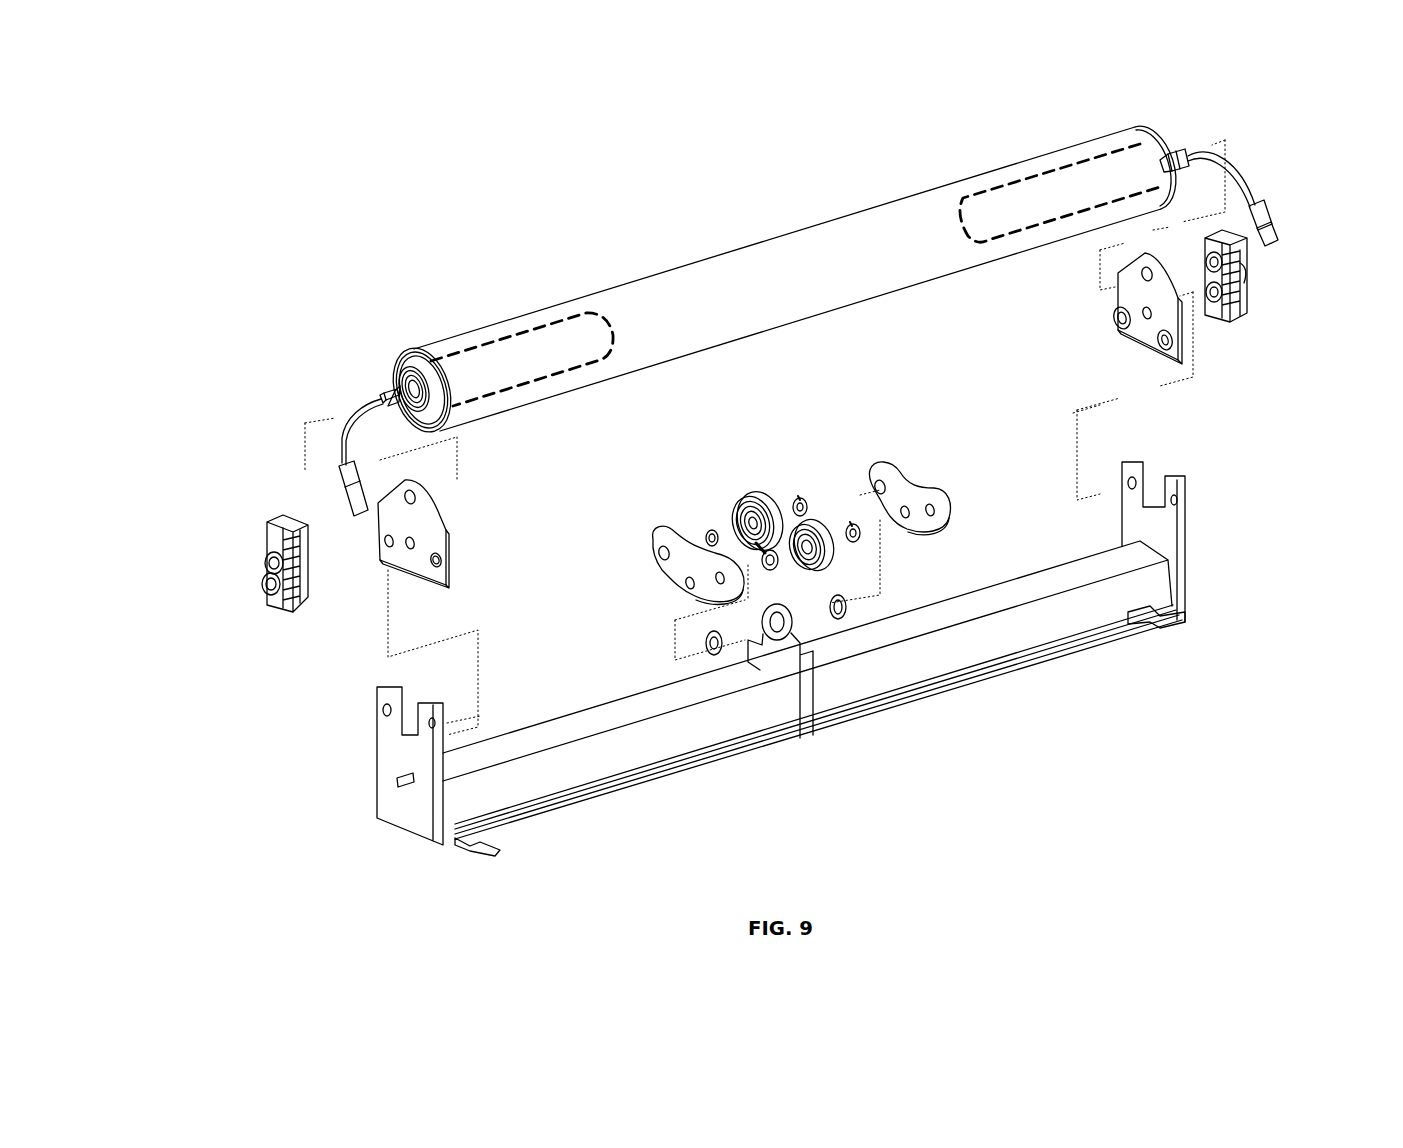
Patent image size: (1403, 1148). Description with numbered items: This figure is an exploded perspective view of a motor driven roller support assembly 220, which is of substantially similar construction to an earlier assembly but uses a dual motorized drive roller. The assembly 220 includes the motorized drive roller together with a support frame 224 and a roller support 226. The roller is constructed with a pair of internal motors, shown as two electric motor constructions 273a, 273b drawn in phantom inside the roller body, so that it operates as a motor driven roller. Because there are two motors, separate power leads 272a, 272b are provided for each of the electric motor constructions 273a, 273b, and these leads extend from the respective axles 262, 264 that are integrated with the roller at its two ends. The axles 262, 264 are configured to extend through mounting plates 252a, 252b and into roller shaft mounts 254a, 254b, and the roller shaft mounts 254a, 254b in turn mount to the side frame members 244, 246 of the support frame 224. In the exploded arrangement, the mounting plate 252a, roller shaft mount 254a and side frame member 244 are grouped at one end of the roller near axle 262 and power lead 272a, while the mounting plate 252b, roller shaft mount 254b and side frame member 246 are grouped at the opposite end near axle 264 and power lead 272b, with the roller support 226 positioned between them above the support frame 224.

The motor driven roller support assembly 220 is at (520, 189).
The support frame 224 is at (1047, 660).
The roller support 226 is at (838, 458).
The side frame member 244 is at (388, 788).
The side frame member 246 is at (1183, 531).
The mounting plate 252a is at (433, 520).
The mounting plate 252b is at (1131, 343).
The roller shaft mount 254a is at (284, 607).
The roller shaft mount 254b is at (1237, 318).
The axle 262 is at (400, 392).
The axle 264 is at (1170, 150).
The power lead 272a is at (342, 427).
The power lead 272b is at (1243, 172).
The electric motor construction 273a is at (426, 380).
The electric motor construction 273b is at (1022, 203).